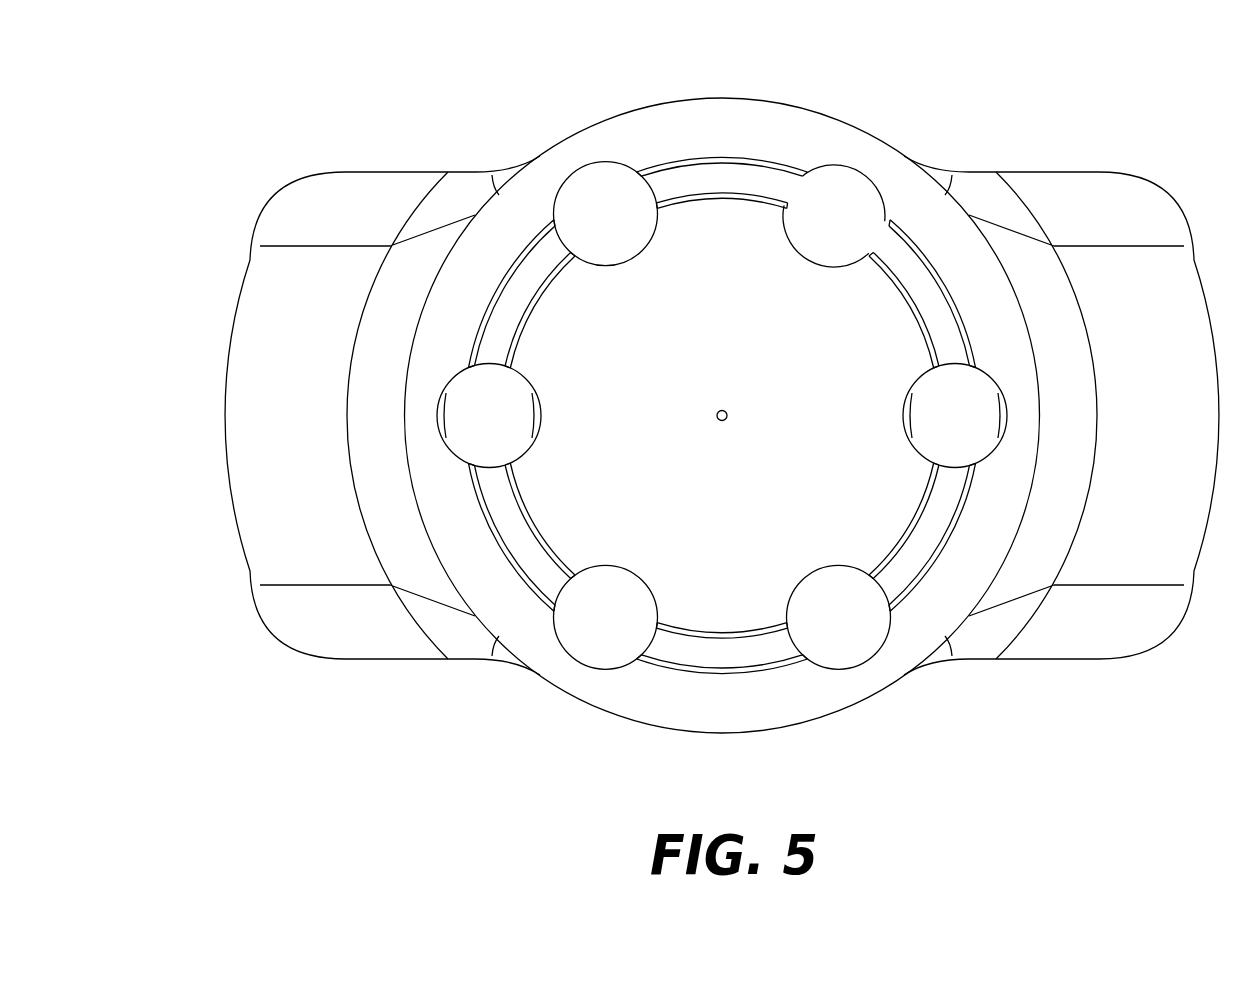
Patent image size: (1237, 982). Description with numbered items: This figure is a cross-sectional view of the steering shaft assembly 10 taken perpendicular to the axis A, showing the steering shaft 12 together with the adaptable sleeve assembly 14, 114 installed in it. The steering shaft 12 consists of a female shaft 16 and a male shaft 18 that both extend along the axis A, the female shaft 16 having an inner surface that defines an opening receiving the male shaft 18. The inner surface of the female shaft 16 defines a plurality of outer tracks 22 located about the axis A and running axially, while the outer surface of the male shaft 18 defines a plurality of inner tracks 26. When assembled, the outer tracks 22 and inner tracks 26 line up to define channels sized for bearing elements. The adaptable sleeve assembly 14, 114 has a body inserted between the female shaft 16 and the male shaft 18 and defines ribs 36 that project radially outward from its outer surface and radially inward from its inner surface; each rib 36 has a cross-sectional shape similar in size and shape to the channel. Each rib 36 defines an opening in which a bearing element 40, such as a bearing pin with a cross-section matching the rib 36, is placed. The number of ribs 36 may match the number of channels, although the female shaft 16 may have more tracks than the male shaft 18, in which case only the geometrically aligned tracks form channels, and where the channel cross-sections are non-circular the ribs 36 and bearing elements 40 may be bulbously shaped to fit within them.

The steering shaft assembly 10 is at (701, 410).
The steering shaft 12 is at (482, 125).
The adaptable sleeve assembly 14 is at (579, 468).
The adaptable sleeve assembly 114 is at (579, 468).
The female shaft 16 is at (896, 152).
The male shaft 18 is at (727, 620).
The outer tracks 22 is at (597, 165).
The rib 36 is at (833, 212).
The inner tracks 26 is at (622, 566).
The bearing element 40 is at (845, 647).
The axis A is at (727, 414).